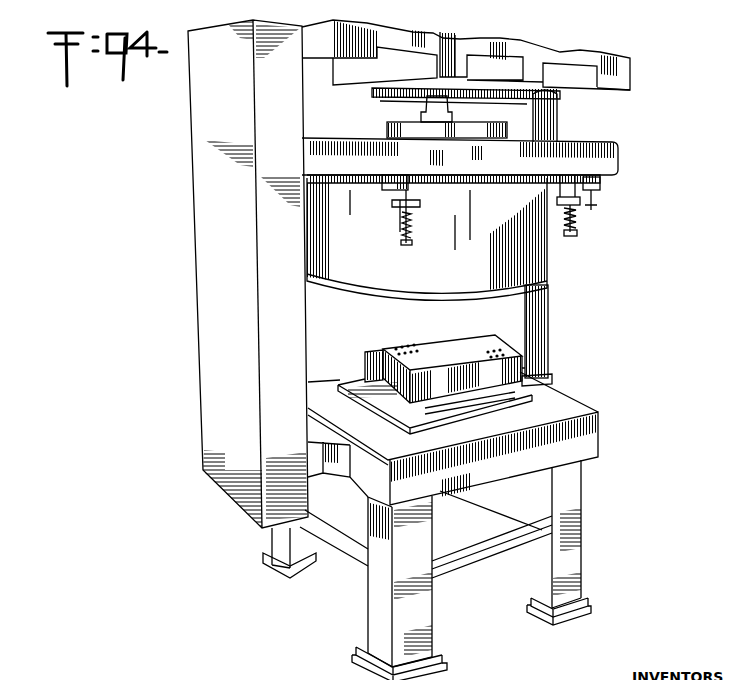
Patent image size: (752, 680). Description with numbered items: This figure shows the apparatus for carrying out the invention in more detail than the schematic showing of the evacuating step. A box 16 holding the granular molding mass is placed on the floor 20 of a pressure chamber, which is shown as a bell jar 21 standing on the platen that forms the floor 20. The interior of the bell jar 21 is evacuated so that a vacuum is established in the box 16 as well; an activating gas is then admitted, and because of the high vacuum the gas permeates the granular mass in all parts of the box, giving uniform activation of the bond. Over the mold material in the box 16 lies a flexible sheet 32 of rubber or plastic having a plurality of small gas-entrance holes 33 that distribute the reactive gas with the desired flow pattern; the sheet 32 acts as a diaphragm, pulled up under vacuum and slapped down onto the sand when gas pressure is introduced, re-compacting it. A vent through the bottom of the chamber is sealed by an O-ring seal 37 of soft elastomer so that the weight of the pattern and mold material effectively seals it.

The box 16 is at (512, 373).
The floor 20 is at (548, 394).
The bell jar 21 is at (549, 263).
The flexible sheet 32 is at (404, 345).
The gas-entrance holes 33 is at (493, 360).
The O-ring seal 37 is at (393, 422).